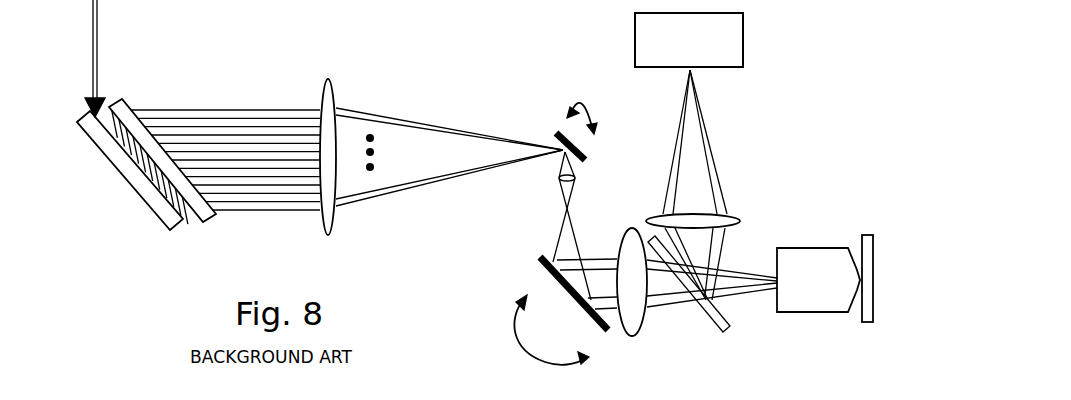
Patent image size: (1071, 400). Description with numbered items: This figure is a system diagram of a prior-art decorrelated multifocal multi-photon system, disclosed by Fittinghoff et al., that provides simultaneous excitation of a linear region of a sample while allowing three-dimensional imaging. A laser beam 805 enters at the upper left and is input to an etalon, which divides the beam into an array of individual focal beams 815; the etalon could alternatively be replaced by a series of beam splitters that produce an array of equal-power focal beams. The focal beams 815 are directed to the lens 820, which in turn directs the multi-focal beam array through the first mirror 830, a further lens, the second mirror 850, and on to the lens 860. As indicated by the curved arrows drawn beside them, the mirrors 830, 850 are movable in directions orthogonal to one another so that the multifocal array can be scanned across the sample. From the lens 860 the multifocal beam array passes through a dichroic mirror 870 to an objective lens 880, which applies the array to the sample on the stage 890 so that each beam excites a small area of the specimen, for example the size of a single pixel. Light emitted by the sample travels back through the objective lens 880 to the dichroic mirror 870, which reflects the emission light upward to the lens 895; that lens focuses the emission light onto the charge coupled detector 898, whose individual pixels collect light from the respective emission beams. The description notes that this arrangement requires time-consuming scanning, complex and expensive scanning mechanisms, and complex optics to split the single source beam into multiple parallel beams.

The laser beam 805 is at (100, 30).
The individual focal beams 815 is at (264, 106).
The lens 820 is at (330, 78).
The first mirror 830 is at (590, 153).
The second mirror 850 is at (540, 260).
The lens 860 is at (633, 337).
The dichroic mirror 870 is at (720, 338).
The objective lens 880 is at (818, 280).
The stage 890 is at (860, 230).
The lens 895 is at (740, 226).
The charge coupled detector 898 is at (744, 34).